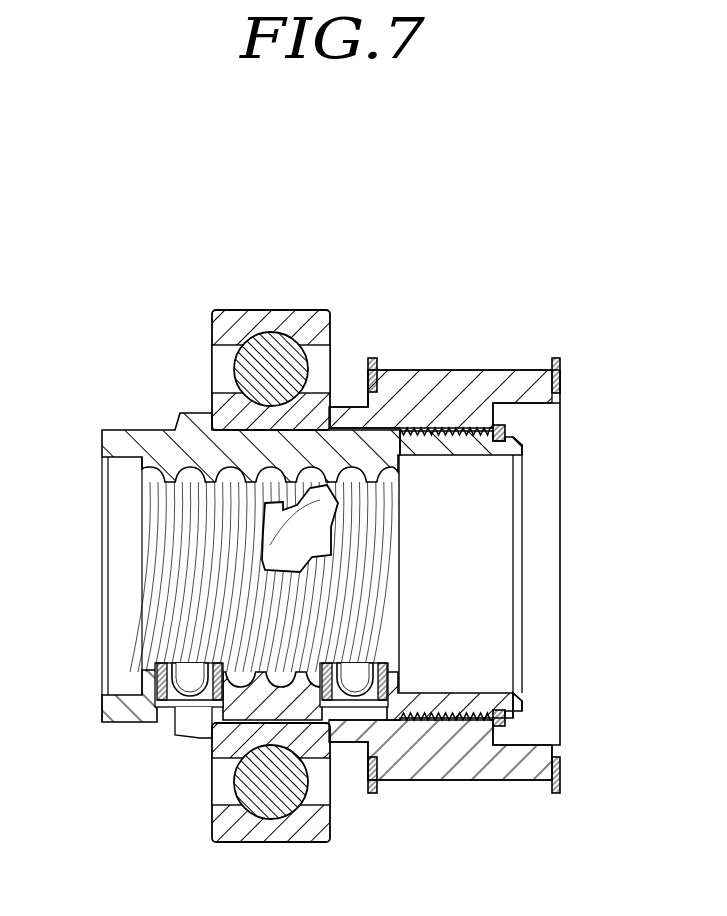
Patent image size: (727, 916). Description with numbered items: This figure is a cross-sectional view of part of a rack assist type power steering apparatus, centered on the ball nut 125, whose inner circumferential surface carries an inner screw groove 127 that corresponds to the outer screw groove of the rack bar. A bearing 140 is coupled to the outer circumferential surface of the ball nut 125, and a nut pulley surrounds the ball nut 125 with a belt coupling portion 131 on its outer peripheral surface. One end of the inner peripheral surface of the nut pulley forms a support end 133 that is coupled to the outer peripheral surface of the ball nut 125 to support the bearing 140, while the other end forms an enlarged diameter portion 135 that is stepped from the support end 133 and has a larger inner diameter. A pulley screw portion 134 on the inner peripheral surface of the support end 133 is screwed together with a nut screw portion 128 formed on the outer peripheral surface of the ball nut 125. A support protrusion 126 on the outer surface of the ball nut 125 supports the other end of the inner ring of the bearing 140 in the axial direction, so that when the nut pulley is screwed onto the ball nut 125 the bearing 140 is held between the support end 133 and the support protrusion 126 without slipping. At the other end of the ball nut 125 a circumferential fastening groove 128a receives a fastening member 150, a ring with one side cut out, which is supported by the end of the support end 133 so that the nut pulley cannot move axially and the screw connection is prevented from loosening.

The ball nut 125 is at (132, 718).
The support protrusion 126 is at (193, 413).
The inner screw groove 127 is at (192, 480).
The nut screw portion 128 is at (427, 446).
The fastening groove 128a is at (503, 445).
The belt coupling portion 131 is at (420, 368).
The support end 133 is at (353, 412).
The pulley screw portion 134 is at (453, 427).
The enlarged diameter portion 135 is at (517, 383).
The bearing 140 is at (270, 350).
The fastening member 150 is at (505, 438).